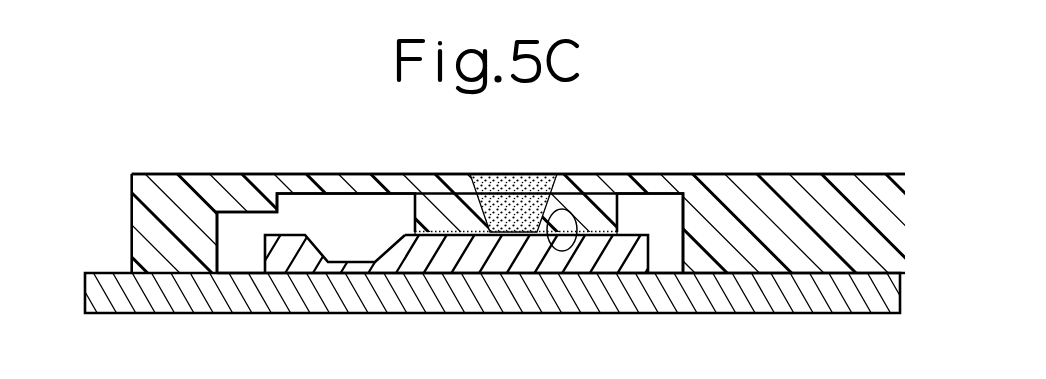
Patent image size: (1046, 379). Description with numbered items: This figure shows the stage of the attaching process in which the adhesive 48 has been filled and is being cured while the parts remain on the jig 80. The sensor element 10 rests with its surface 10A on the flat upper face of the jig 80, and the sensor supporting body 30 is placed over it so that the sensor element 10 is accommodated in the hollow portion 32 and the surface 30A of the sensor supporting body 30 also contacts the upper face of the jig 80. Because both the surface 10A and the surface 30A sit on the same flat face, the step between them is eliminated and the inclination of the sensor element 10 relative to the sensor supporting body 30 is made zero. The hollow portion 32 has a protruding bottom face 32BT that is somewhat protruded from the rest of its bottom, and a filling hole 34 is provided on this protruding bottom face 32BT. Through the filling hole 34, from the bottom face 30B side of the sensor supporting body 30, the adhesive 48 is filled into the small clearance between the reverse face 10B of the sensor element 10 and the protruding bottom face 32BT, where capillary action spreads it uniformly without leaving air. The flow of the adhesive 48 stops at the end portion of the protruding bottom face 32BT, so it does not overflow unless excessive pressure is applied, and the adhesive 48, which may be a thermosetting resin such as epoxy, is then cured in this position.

The sensor element 10 is at (297, 235).
The surface of the sensor element 10A is at (392, 273).
The reverse face of the sensor element 10B is at (409, 236).
The sensor supporting body 30 is at (862, 174).
The surface of the sensor supporting body 30A is at (745, 273).
The bottom face of the supporting body 30B is at (783, 174).
The hollow portion 32 is at (675, 218).
The protruding bottom face of the hollow portion 32BT is at (573, 209).
The filling hole 34 is at (492, 232).
The adhesive 48 is at (508, 190).
The jig 80 is at (848, 314).